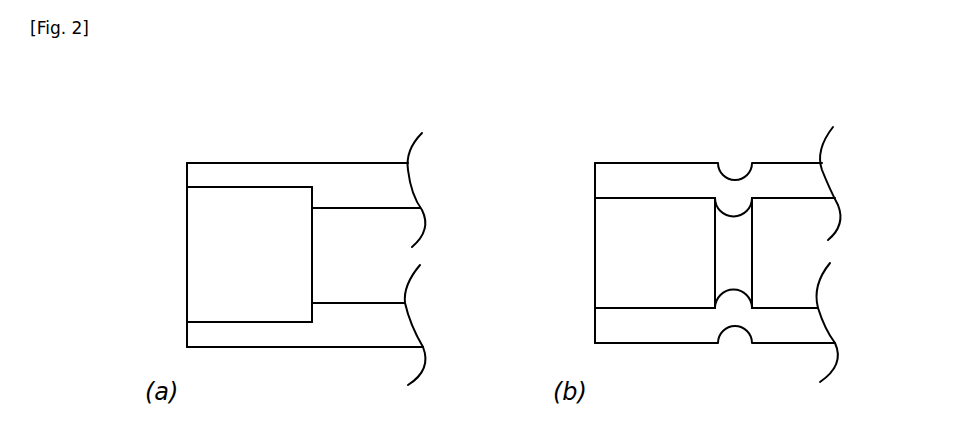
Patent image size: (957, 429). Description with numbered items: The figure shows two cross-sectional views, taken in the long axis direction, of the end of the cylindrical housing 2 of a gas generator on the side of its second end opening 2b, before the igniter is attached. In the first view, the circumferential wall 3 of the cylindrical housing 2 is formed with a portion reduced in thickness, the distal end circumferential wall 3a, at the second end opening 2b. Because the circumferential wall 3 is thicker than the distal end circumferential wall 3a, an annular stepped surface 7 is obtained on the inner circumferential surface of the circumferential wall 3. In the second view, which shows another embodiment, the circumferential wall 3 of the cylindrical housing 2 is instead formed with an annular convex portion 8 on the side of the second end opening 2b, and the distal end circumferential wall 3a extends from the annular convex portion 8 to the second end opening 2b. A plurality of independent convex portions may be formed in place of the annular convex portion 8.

The cylindrical housing 2 is at (345, 158).
The second end opening 2b is at (186, 288).
The circumferential wall 3 is at (353, 195).
The distal end circumferential wall 3a is at (221, 191).
The annular stepped surface 7 is at (308, 193).
The annular convex portion 8 is at (735, 213).